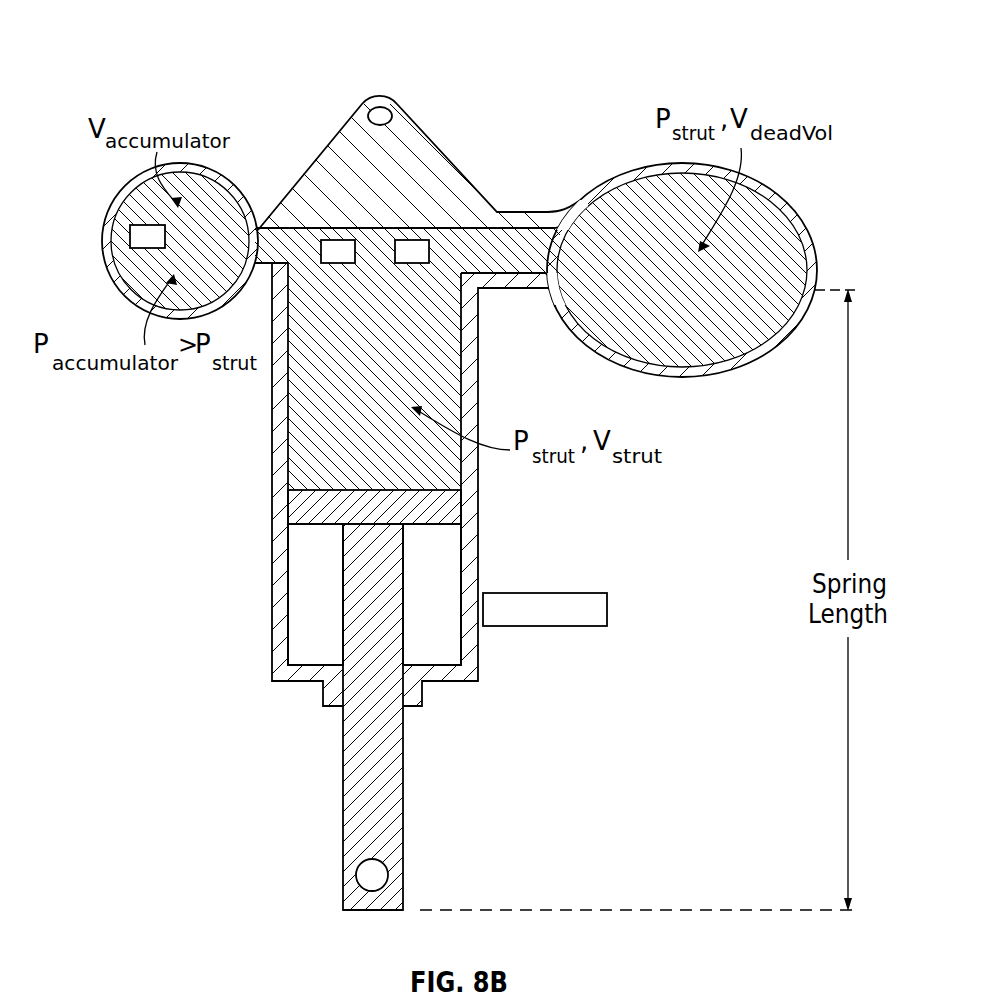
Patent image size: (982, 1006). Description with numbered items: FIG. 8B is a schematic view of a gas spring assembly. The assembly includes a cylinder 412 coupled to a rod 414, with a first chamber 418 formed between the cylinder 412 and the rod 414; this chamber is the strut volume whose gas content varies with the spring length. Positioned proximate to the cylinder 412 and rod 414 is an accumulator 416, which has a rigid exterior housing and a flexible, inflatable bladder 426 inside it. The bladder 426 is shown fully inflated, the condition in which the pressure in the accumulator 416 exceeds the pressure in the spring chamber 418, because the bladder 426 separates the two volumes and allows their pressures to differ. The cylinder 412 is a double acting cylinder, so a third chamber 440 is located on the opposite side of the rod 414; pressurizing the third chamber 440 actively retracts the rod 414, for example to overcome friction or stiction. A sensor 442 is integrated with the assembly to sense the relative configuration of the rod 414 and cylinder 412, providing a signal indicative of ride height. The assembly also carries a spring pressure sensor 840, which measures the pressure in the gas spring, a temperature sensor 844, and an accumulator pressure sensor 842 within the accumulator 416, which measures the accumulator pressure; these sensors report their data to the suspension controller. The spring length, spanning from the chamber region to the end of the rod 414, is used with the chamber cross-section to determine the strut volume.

The cylinder 412 is at (268, 583).
The rod 414 is at (403, 775).
The accumulator 416 is at (103, 266).
The first chamber 418 is at (438, 368).
The bladder 426 is at (236, 187).
The third chamber 440 is at (455, 650).
The sensor 442 is at (608, 609).
The accumulator pressure sensor 842 is at (146, 233).
The spring pressure sensor 840 is at (338, 240).
The temperature sensor 844 is at (412, 240).